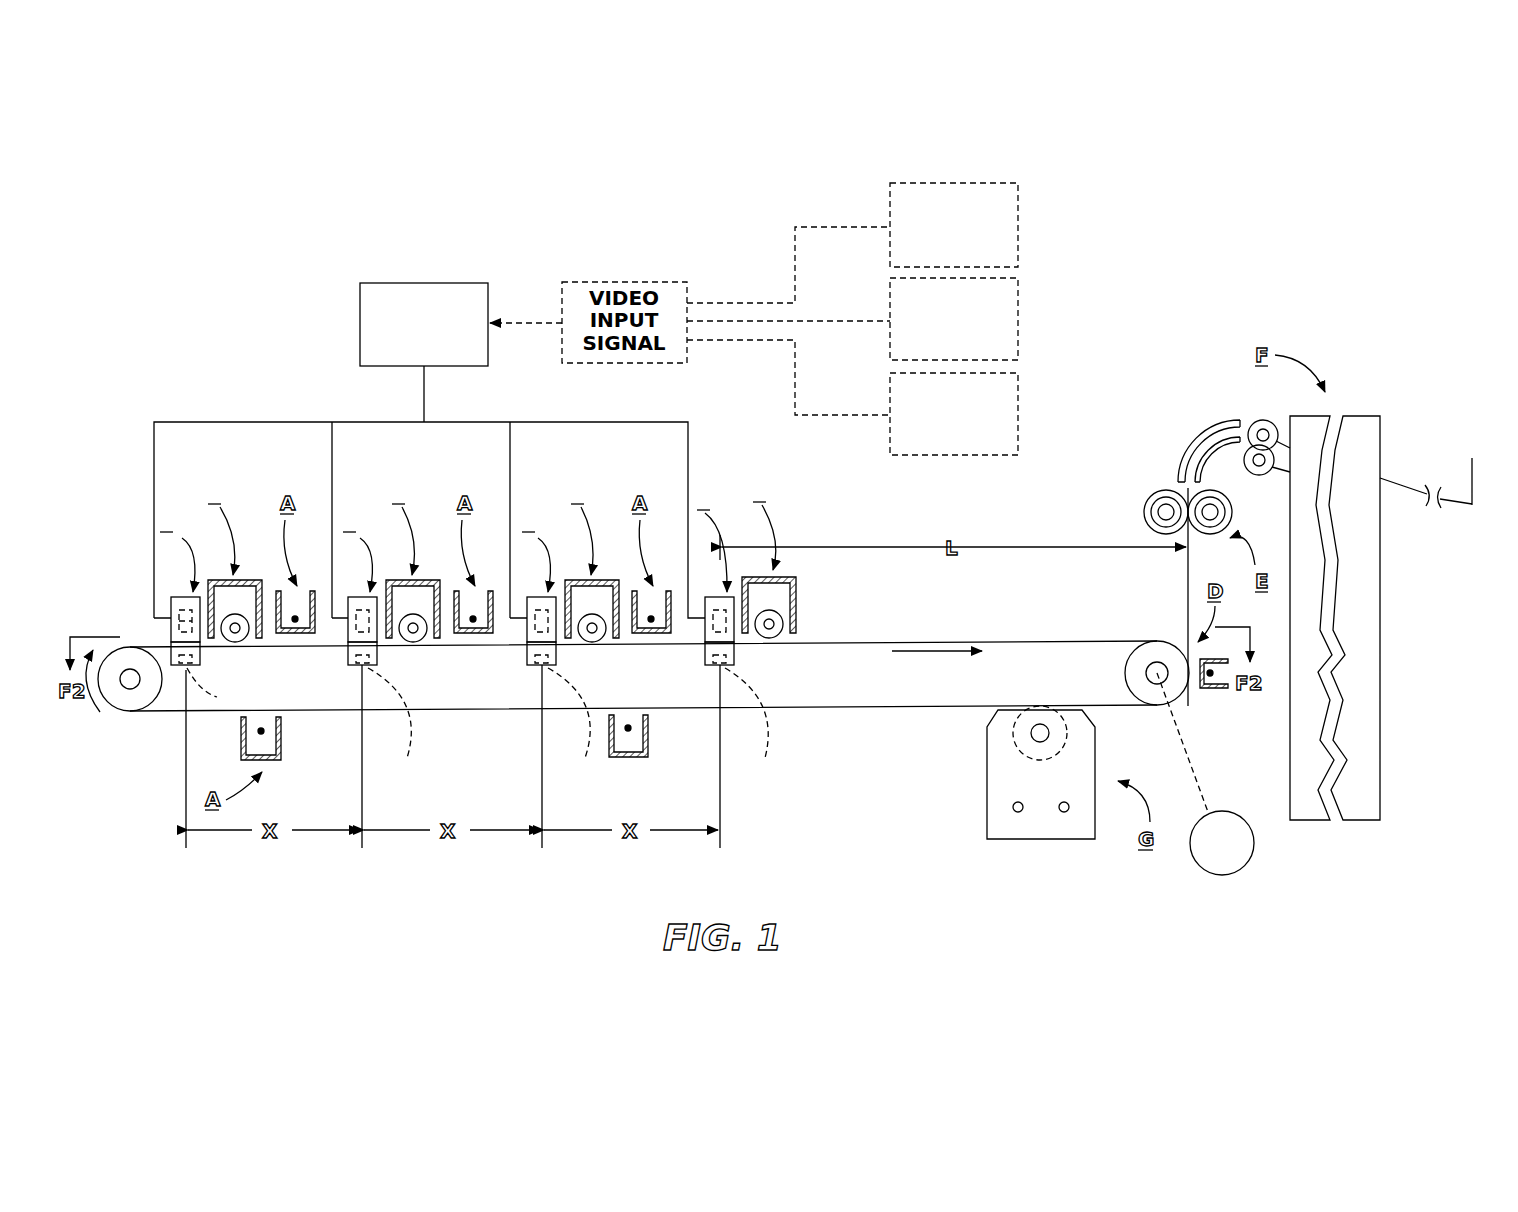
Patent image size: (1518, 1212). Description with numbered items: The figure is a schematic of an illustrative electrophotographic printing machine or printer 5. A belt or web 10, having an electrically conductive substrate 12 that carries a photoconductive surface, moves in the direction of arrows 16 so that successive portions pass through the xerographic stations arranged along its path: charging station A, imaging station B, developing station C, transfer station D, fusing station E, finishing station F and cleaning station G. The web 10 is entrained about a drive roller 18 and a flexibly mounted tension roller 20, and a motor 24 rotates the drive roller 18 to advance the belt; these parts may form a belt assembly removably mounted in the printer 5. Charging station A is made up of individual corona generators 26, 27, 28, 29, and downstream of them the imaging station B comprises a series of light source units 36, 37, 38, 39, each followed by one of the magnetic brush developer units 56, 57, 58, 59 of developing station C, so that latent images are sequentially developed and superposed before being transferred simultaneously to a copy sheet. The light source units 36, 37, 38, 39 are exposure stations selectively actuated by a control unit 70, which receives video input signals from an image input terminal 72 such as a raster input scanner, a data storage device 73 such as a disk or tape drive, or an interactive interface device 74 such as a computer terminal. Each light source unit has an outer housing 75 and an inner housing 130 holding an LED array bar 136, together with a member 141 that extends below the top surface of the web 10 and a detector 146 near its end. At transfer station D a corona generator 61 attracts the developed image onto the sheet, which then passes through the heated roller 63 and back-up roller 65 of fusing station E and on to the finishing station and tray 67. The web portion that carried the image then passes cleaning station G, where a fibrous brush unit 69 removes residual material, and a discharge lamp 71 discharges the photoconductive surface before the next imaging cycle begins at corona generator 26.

The printer 5 is at (275, 350).
The control unit 70 is at (360, 325).
The image input terminal 72 is at (1018, 220).
The data storage device 73 is at (1018, 316).
The interactive interface device 74 is at (1010, 410).
The web 10 is at (643, 677).
The electrically conductive substrate 12 is at (866, 705).
The arrows 16 is at (930, 655).
The drive roller 18 is at (1150, 655).
The tension roller 20 is at (130, 697).
The motor 24 is at (1245, 852).
The corona generator 26 is at (283, 738).
The corona generator 27 is at (255, 593).
The corona generator 28 is at (433, 593).
The corona generator 29 is at (612, 593).
The light source unit 36 is at (457, 628).
The light source unit 37 is at (349, 592).
The light source unit 38 is at (530, 592).
The light source unit 39 is at (708, 592).
The magnetic brush developer unit 56 is at (224, 553).
The magnetic brush developer unit 57 is at (402, 553).
The magnetic brush developer unit 58 is at (581, 553).
The magnetic brush developer unit 59 is at (750, 585).
The corona generator 61 is at (1217, 688).
The heated roller 63 is at (1142, 513).
The back-up roller 65 is at (1233, 513).
The tray 67 is at (1452, 507).
The fibrous brush unit 69 is at (1040, 840).
The discharge lamp 71 is at (650, 740).
The outer housing 75 is at (171, 633).
The inner housing 130 is at (174, 613).
The LED array bar 136 is at (174, 622).
The member 141 is at (201, 657).
The detector 146 is at (487, 727).